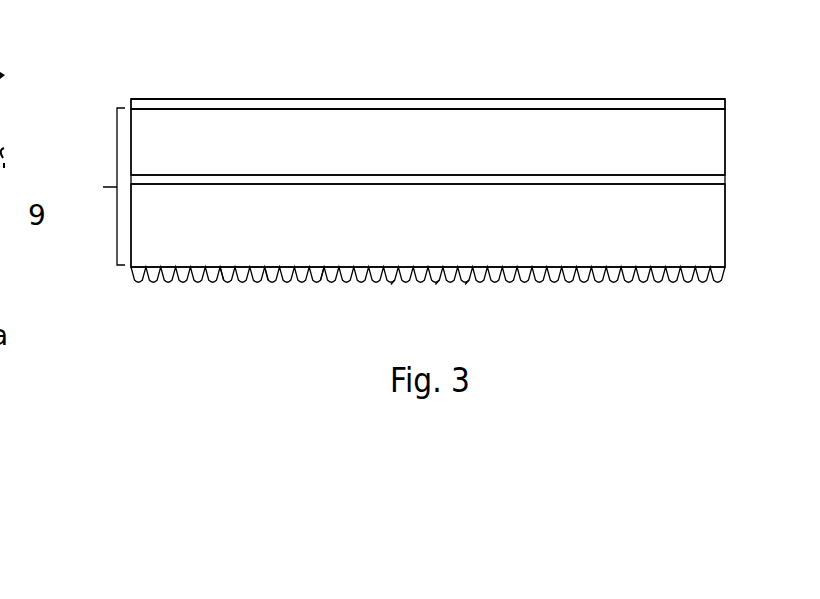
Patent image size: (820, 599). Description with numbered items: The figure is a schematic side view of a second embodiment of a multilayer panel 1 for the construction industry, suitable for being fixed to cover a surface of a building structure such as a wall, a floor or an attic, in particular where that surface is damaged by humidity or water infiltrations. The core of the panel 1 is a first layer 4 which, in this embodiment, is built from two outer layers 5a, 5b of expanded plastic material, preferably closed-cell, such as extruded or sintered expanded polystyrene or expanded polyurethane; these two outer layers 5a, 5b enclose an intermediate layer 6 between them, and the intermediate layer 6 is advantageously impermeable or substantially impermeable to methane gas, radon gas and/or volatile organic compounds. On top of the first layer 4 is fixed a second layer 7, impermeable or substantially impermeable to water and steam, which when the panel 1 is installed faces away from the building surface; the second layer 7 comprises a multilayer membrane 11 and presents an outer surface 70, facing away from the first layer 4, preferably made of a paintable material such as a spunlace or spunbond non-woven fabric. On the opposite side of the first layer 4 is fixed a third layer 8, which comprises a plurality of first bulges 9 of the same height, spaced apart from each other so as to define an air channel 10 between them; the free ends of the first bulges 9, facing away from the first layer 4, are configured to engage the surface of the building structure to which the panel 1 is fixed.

The multilayer panel 1 is at (463, 82).
The first layer 4 is at (102, 186).
The outer layer 5a is at (702, 142).
The outer layer 5b is at (708, 223).
The intermediate layer 6 is at (713, 180).
The second layer 7 is at (312, 100).
The third layer 8 is at (718, 281).
The first bulges 9 is at (326, 279).
The air channel 10 is at (399, 287).
The multilayer membrane 11 is at (385, 100).
The outer surface 70 is at (528, 98).